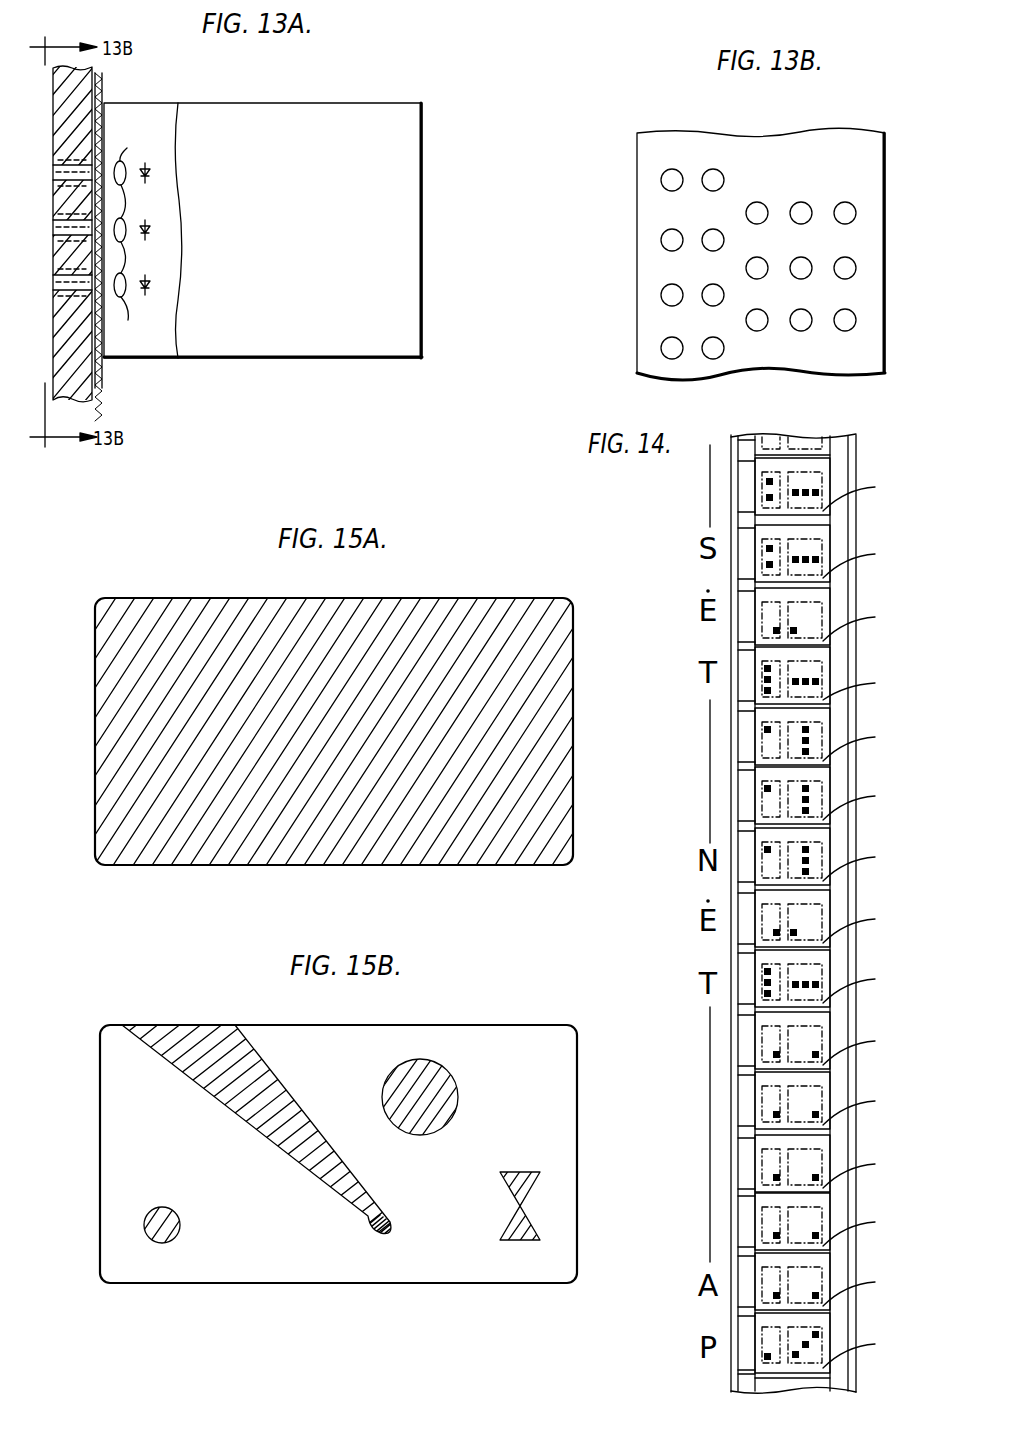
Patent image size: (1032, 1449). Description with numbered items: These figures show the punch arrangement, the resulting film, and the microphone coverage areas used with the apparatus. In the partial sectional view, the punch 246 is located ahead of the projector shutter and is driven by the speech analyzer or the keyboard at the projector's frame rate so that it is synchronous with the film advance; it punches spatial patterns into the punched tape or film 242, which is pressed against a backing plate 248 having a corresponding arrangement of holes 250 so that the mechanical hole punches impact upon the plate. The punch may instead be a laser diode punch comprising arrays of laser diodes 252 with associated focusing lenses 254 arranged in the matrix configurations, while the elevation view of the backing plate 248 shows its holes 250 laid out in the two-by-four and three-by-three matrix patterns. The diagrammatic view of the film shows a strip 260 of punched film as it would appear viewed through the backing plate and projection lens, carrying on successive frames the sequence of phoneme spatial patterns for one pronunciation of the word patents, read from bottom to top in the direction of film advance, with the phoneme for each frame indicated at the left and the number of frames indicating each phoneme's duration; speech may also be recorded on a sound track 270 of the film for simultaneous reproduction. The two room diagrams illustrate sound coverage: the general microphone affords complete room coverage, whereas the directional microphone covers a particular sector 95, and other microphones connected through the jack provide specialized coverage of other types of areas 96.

In FIG. 13A, the punched tape or film 242 is at (102, 84).
In FIG. 13A, the punch 246 is at (352, 103).
In FIG. 13A, the backing plate 248 is at (78, 116).
In FIG. 13B, the backing plate 248 is at (647, 222).
In FIG. 13A, the holes 250 is at (108, 223).
In FIG. 13B, the holes 250 is at (843, 203).
In FIG. 13A, the laser diodes 252 is at (150, 286).
In FIG. 13A, the focusing lenses 254 is at (124, 165).
In FIG. 14, the strip of punched film 260 is at (866, 465).
In FIG. 14, the sound track 270 is at (838, 658).
In FIG. 15B, the sector 95 is at (208, 1097).
In FIG. 15B, the areas 96 is at (457, 1089).